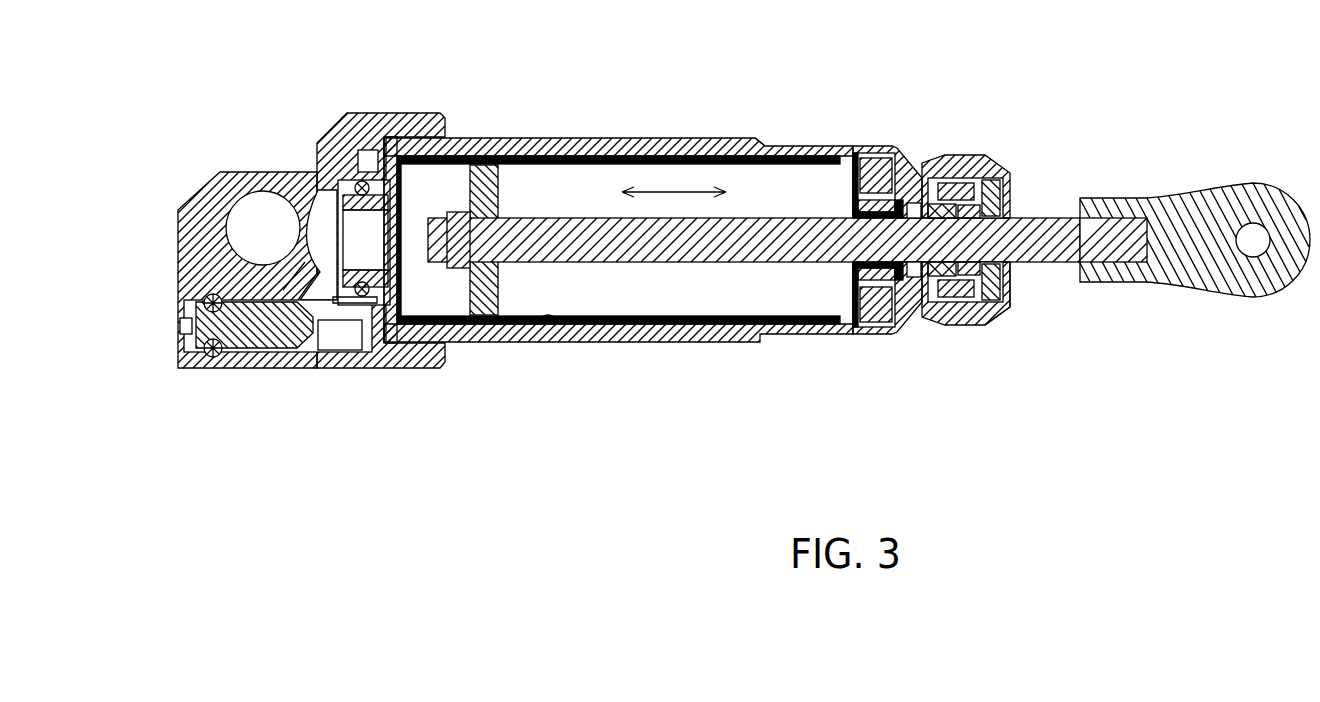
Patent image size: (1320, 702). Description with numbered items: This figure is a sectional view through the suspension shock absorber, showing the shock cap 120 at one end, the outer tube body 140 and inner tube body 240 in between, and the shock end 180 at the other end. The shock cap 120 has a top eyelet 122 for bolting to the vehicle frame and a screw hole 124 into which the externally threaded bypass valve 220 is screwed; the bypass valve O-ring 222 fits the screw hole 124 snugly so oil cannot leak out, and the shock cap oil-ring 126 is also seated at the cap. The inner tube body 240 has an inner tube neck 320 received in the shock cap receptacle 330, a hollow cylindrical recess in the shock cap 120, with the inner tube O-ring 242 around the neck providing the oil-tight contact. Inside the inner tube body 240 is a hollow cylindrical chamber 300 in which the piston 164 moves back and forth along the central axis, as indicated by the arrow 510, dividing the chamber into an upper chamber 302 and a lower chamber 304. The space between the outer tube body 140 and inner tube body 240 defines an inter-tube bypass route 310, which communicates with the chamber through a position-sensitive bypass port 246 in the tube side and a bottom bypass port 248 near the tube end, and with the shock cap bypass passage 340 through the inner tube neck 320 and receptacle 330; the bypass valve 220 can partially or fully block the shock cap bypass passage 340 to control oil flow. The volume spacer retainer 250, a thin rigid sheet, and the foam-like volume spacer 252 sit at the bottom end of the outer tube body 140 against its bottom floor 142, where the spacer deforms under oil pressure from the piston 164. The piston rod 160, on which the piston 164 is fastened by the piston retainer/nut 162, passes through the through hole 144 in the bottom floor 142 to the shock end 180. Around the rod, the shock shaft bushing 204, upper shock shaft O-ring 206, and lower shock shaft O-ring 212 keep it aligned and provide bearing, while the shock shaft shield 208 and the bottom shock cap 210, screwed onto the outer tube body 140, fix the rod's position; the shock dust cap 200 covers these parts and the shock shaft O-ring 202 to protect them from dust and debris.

The shock cap 120 is at (195, 194).
The top eyelet 122 is at (262, 192).
The screw hole 124 is at (181, 330).
The shock cap oil-ring 126 is at (392, 135).
The outer tube body 140 is at (637, 138).
The bottom floor 142 is at (908, 150).
The through hole 144 is at (899, 322).
The piston rod 160 is at (708, 263).
The piston retainer/nut 162 is at (458, 269).
The piston 164 is at (499, 190).
The shock end 180 is at (1255, 185).
The shock dust cap 200 is at (1008, 160).
The shock shaft O-ring 202 is at (925, 300).
The shock shaft bushing 204 is at (967, 320).
The upper shock shaft O-ring 206 is at (947, 177).
The shock shaft shield 208 is at (991, 155).
The bottom shock cap 210 is at (996, 322).
The lower shock shaft O-ring 212 is at (1013, 300).
The bypass valve 220 is at (263, 348).
The bypass valve O-ring 222 is at (213, 357).
The inner tube body 240 is at (705, 160).
The inner tube O-ring 242 is at (345, 195).
The position-sensitive bypass port 246 is at (548, 318).
The bottom bypass port 248 is at (856, 152).
The volume spacer retainer 250 is at (845, 333).
The volume spacer 252 is at (868, 330).
The hollow cylindrical chamber 300 is at (625, 293).
The upper chamber 302 is at (454, 202).
The lower chamber 304 is at (584, 204).
The inter-tube bypass route 310 is at (773, 147).
The inner tube neck 320 is at (386, 340).
The shock cap receptacle 330 is at (318, 240).
The shock cap bypass passage 340 is at (347, 340).
The arrow 510 is at (700, 192).